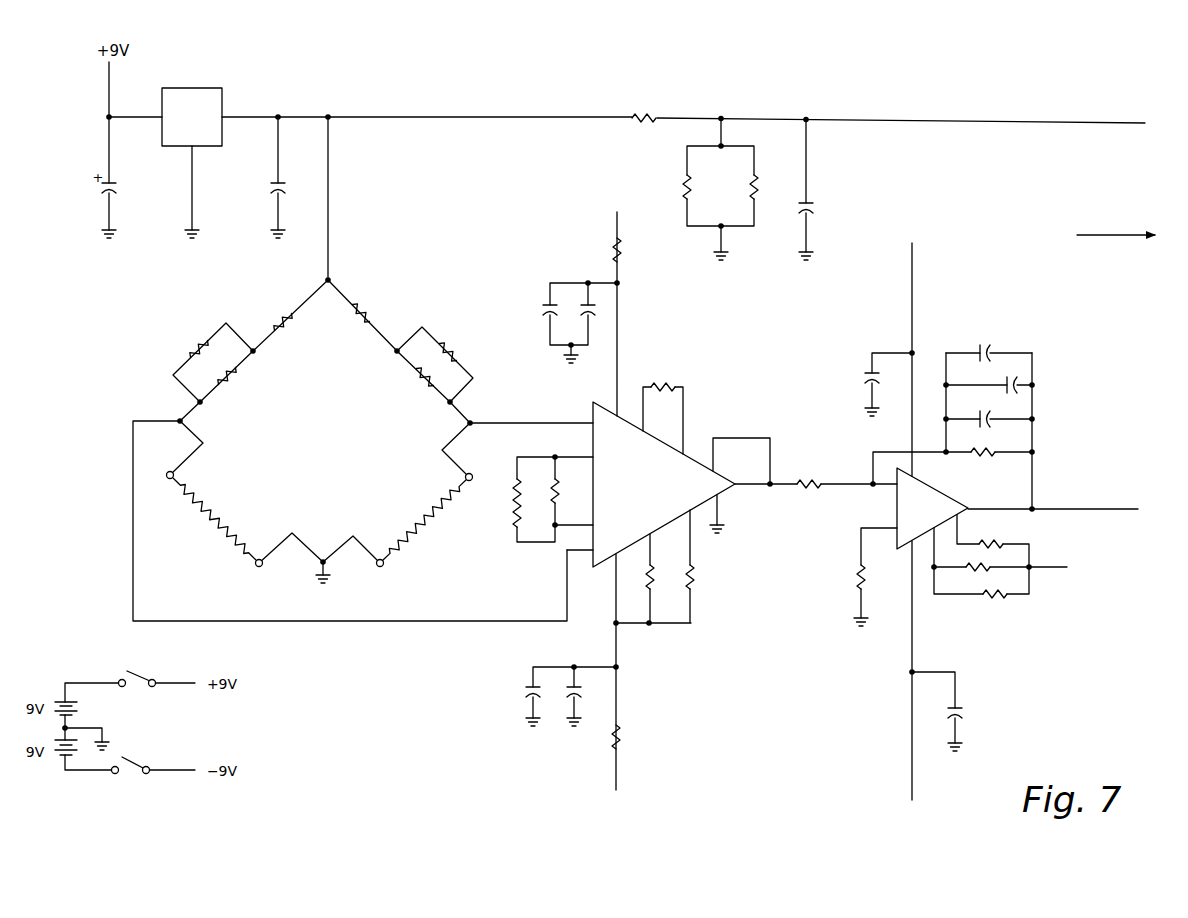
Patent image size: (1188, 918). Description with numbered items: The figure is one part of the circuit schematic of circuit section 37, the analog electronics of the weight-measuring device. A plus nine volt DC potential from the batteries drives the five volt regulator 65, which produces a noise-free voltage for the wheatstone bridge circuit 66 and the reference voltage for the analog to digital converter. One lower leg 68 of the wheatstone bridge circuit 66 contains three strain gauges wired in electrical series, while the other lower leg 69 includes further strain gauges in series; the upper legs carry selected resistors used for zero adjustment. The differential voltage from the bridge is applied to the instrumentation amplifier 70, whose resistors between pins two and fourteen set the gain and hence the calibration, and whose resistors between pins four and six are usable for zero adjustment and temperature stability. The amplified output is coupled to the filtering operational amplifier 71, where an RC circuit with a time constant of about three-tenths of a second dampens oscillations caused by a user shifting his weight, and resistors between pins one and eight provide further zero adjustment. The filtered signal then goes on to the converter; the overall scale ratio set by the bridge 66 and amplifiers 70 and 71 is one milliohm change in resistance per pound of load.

The circuit section 37 is at (757, 70).
The 5 volt regulator 65 is at (208, 82).
The wheatstone bridge circuit 66 is at (320, 422).
The lower leg 68 is at (211, 492).
The lower leg 69 is at (436, 528).
The instrumentation amplifier 70 is at (697, 455).
The filtering operational amplifier 71 is at (895, 500).